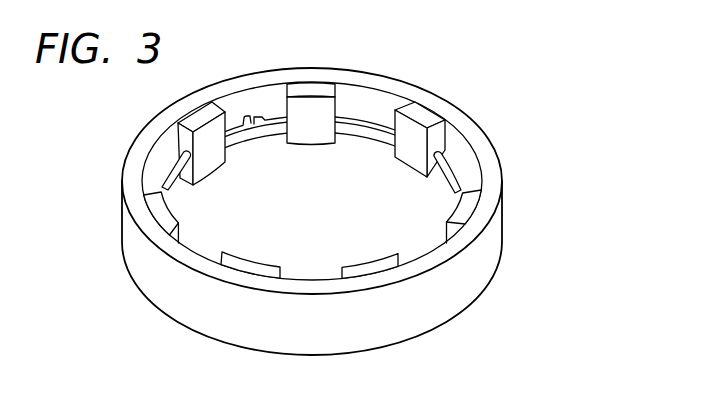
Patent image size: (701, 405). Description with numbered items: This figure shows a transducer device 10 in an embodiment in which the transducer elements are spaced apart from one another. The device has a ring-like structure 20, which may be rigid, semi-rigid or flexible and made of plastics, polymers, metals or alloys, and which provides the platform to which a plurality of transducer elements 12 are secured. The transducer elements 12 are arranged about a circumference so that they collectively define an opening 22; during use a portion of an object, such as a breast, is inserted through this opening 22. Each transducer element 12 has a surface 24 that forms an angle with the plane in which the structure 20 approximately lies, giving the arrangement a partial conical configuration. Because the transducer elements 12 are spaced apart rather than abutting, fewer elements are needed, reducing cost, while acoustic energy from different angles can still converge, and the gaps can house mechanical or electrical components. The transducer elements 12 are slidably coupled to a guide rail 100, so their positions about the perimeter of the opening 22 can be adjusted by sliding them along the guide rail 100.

The transducer device 10 is at (530, 114).
The transducer elements 12 is at (336, 108).
The structure 20 is at (457, 290).
The opening 22 is at (413, 222).
The surface 24 is at (413, 148).
The guide rail 100 is at (353, 117).